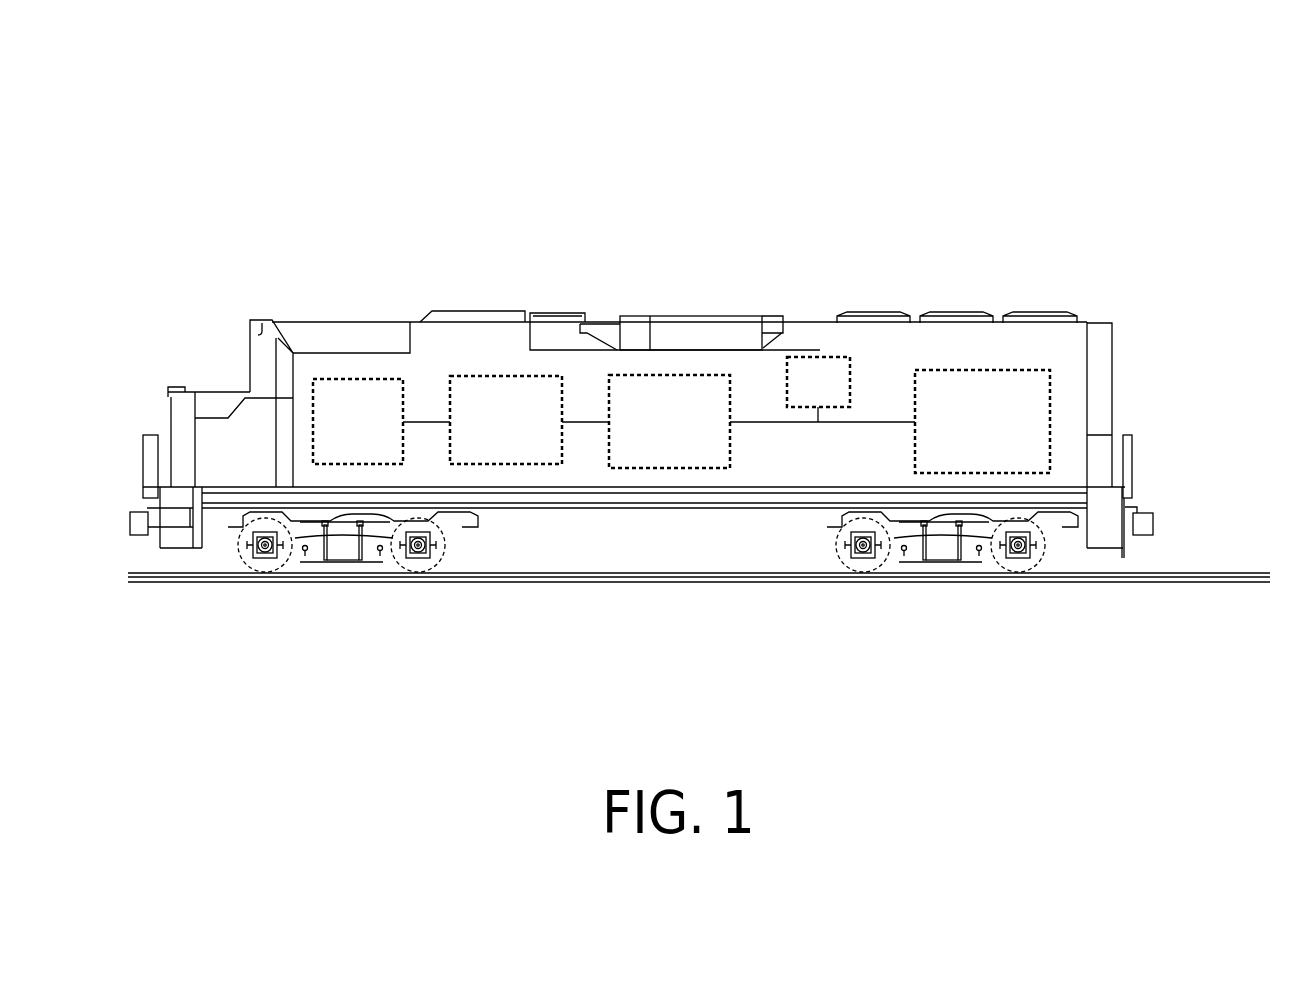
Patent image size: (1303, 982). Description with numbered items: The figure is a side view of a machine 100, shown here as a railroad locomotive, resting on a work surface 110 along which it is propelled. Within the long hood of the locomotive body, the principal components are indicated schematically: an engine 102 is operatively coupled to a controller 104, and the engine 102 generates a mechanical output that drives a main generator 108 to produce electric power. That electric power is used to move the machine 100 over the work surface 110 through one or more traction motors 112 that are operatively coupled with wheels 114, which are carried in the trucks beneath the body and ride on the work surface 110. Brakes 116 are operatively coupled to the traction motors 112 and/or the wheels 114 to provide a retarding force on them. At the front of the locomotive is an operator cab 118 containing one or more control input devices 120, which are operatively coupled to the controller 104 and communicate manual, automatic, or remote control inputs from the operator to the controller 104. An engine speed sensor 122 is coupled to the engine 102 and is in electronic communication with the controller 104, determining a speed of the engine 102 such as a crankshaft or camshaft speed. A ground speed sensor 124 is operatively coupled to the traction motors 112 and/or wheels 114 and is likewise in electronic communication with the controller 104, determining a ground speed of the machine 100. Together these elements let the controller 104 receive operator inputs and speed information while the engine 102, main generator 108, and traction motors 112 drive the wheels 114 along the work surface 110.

The machine 100 is at (1060, 128).
The engine 102 is at (692, 434).
The controller 104 is at (527, 434).
The main generator 108 is at (1004, 434).
The work surface 110 is at (1212, 575).
The traction motors 112 is at (337, 560).
The wheels 114 is at (265, 572).
The brakes 116 is at (838, 542).
The operator cab 118 is at (183, 292).
The control input devices 120 is at (379, 434).
The engine speed sensor 122 is at (838, 394).
The ground speed sensor 124 is at (1022, 558).